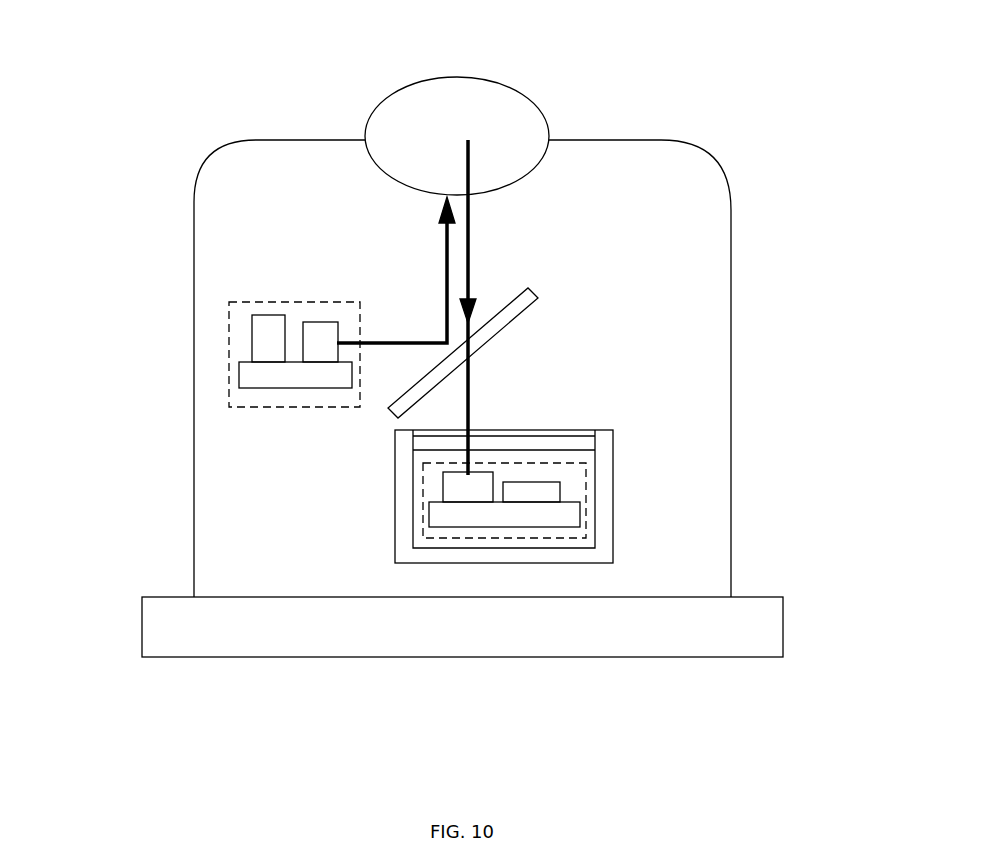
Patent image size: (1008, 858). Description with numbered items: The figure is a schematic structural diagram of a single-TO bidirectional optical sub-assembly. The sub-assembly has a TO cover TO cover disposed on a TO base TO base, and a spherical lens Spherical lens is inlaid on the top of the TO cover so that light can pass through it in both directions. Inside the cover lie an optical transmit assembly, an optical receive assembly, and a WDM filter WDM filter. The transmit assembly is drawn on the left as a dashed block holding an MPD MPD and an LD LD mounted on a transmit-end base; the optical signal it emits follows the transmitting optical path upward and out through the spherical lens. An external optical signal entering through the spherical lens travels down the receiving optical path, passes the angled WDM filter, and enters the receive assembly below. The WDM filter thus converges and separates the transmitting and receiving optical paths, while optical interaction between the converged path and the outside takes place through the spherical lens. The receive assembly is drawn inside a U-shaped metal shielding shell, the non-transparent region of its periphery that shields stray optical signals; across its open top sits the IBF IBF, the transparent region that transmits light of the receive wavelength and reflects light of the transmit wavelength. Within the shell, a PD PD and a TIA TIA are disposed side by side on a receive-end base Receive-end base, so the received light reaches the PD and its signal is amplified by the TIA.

The element TO cover is at (237, 147).
The spherical lens Spherical lens is at (477, 113).
The element TO base is at (292, 627).
The element MPD is at (275, 343).
The element LD is at (323, 348).
The element WDM filter is at (537, 297).
The element IBF is at (545, 436).
The element PD is at (462, 490).
The element TIA is at (543, 490).
The receive-end base Receive-end base is at (502, 515).